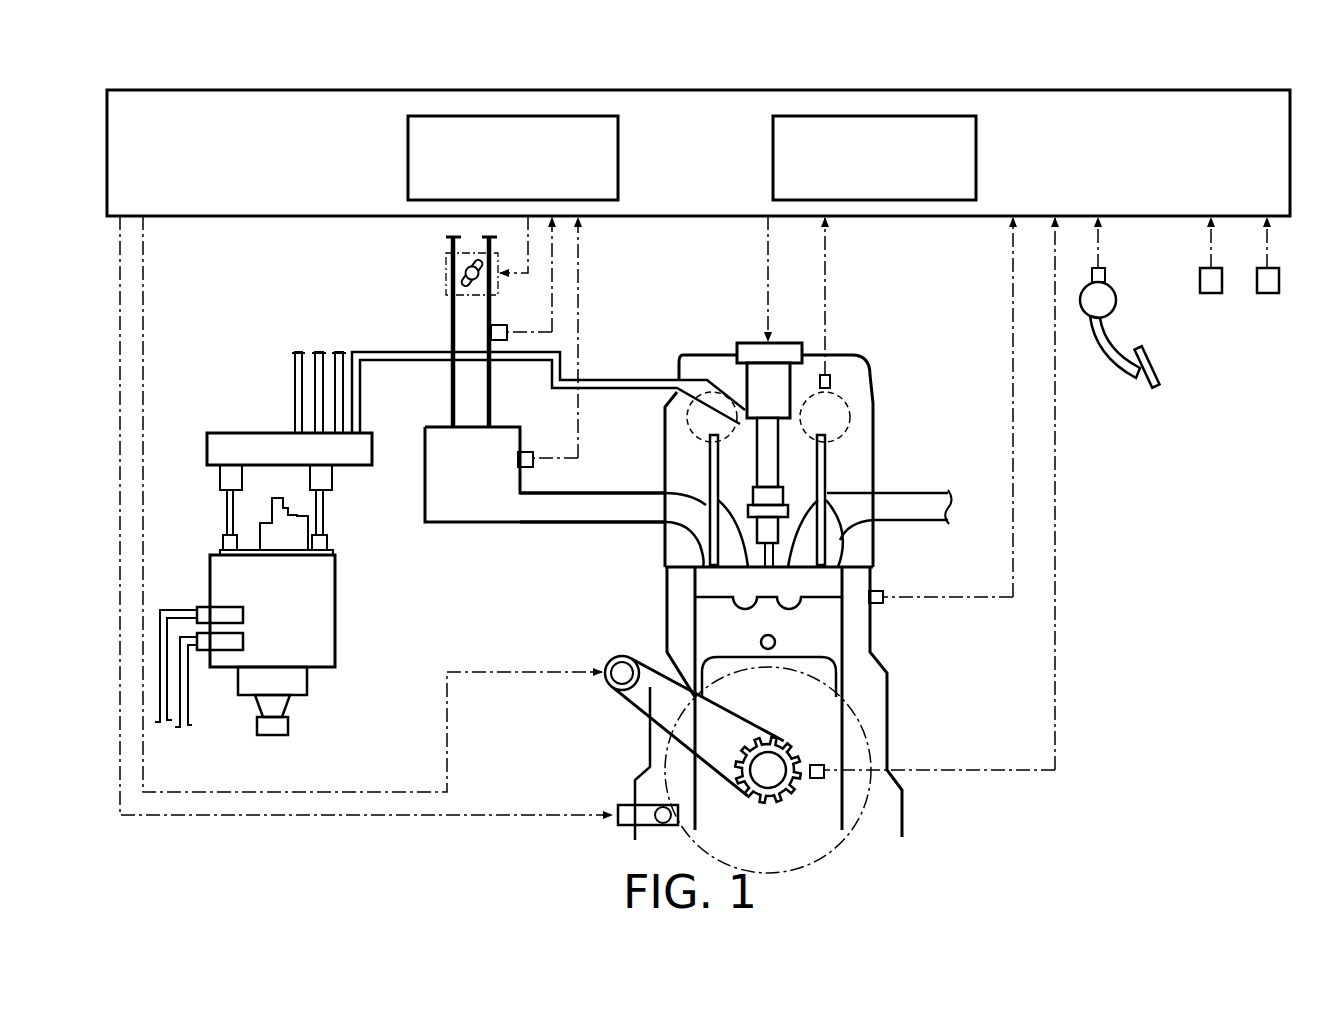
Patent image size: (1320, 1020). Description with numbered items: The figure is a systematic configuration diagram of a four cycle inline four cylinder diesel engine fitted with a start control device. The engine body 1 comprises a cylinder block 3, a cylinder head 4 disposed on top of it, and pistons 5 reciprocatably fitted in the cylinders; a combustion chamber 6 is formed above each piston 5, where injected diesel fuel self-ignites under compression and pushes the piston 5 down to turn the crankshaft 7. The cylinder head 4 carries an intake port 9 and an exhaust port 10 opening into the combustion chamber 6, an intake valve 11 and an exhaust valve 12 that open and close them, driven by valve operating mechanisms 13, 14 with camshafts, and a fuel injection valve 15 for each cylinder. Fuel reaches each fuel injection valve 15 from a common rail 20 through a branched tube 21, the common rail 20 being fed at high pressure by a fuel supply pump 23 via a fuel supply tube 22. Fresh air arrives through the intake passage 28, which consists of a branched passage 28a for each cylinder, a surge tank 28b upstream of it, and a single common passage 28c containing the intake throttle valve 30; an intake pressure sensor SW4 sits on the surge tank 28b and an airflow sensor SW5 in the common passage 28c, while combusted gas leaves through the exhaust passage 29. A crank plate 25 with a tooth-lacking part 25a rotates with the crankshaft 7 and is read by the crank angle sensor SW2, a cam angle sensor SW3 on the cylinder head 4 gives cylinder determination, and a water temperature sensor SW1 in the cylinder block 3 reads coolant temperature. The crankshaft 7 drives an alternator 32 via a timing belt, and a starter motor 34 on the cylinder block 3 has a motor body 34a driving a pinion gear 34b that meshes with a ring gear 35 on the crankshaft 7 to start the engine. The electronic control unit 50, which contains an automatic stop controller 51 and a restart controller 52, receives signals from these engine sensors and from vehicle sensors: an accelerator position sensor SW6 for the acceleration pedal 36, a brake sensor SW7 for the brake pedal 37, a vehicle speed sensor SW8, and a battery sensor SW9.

The engine body 1 is at (752, 580).
The cylinder block 3 is at (873, 693).
The cylinder head 4 is at (863, 420).
The piston 5 is at (820, 635).
The combustion chamber 6 is at (705, 585).
The crankshaft 7 is at (790, 790).
The intake port 9 is at (695, 530).
The exhaust port 10 is at (840, 541).
The intake valve 11 is at (707, 467).
The exhaust valve 12 is at (827, 463).
The valve operating mechanism 13 is at (687, 418).
The valve operating mechanism 14 is at (843, 398).
The fuel injection valve 15 is at (757, 385).
The common rail 20 is at (262, 443).
The branched tube 21 is at (377, 350).
The fuel supply tube 22 is at (326, 508).
The fuel supply pump 23 is at (335, 622).
The crank plate 25 is at (775, 740).
The tooth-lacking part 25a is at (755, 800).
The intake passage 28 is at (548, 419).
The branched passage 28a is at (563, 525).
The surge tank 28b is at (457, 525).
The common passage 28c is at (452, 408).
The exhaust passage 29 is at (935, 490).
The intake throttle valve 30 is at (446, 268).
The alternator 32 is at (604, 662).
The starter motor 34 is at (596, 756).
The motor body 34a is at (622, 804).
The pinion gear 34b is at (628, 777).
The ring gear 35 is at (867, 803).
The acceleration pedal 36 is at (1140, 341).
The brake pedal 37 is at (1120, 378).
The electronic control unit 50 is at (1015, 90).
The automatic stop controller 51 is at (408, 160).
The restart controller 52 is at (976, 160).
The water temperature sensor SW1 is at (888, 596).
The crank angle sensor SW2 is at (816, 764).
The cam angle sensor SW3 is at (832, 380).
The intake pressure sensor SW4 is at (523, 467).
The airflow sensor SW5 is at (498, 340).
The accelerator position sensor SW6 is at (1153, 268).
The brake sensor SW7 is at (1106, 276).
The vehicle speed sensor SW8 is at (1210, 293).
The battery sensor SW9 is at (1268, 293).